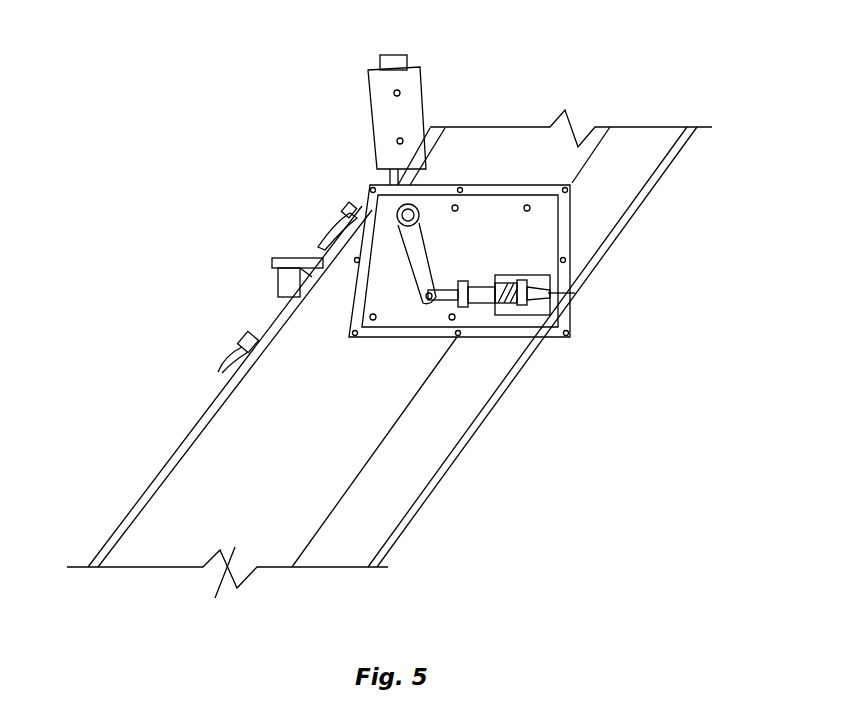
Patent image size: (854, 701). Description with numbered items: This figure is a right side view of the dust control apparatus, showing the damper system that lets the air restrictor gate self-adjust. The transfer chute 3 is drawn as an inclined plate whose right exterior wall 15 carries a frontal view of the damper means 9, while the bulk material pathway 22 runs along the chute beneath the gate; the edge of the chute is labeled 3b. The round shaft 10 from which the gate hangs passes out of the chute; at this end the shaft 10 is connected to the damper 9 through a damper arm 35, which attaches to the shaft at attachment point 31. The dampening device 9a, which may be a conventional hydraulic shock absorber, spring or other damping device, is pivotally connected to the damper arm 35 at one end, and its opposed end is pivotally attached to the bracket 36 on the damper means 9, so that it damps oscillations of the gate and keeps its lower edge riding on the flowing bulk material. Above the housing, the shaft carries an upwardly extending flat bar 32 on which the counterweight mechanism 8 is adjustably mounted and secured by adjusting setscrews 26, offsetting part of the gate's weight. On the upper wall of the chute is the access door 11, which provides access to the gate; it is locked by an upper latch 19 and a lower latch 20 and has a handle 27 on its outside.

The transfer chute 3 is at (173, 503).
The plate edge 3b is at (443, 478).
The counterweight mechanism 8 is at (350, 93).
The damper 9 is at (572, 356).
The dampening device 9a is at (477, 283).
The round shaft 10 is at (396, 212).
The access door 11 is at (216, 190).
The right exterior wall 15 is at (216, 591).
The upper latch 19 is at (345, 213).
The lower latch 20 is at (248, 345).
The bulk material pathway 22 is at (467, 383).
The adjusting setscrews 26 is at (401, 138).
The handle 27 is at (280, 280).
The attachment point 31 is at (425, 222).
The flat bar 32 is at (391, 52).
The damper arm 35 is at (413, 273).
The bracket 36 is at (575, 293).